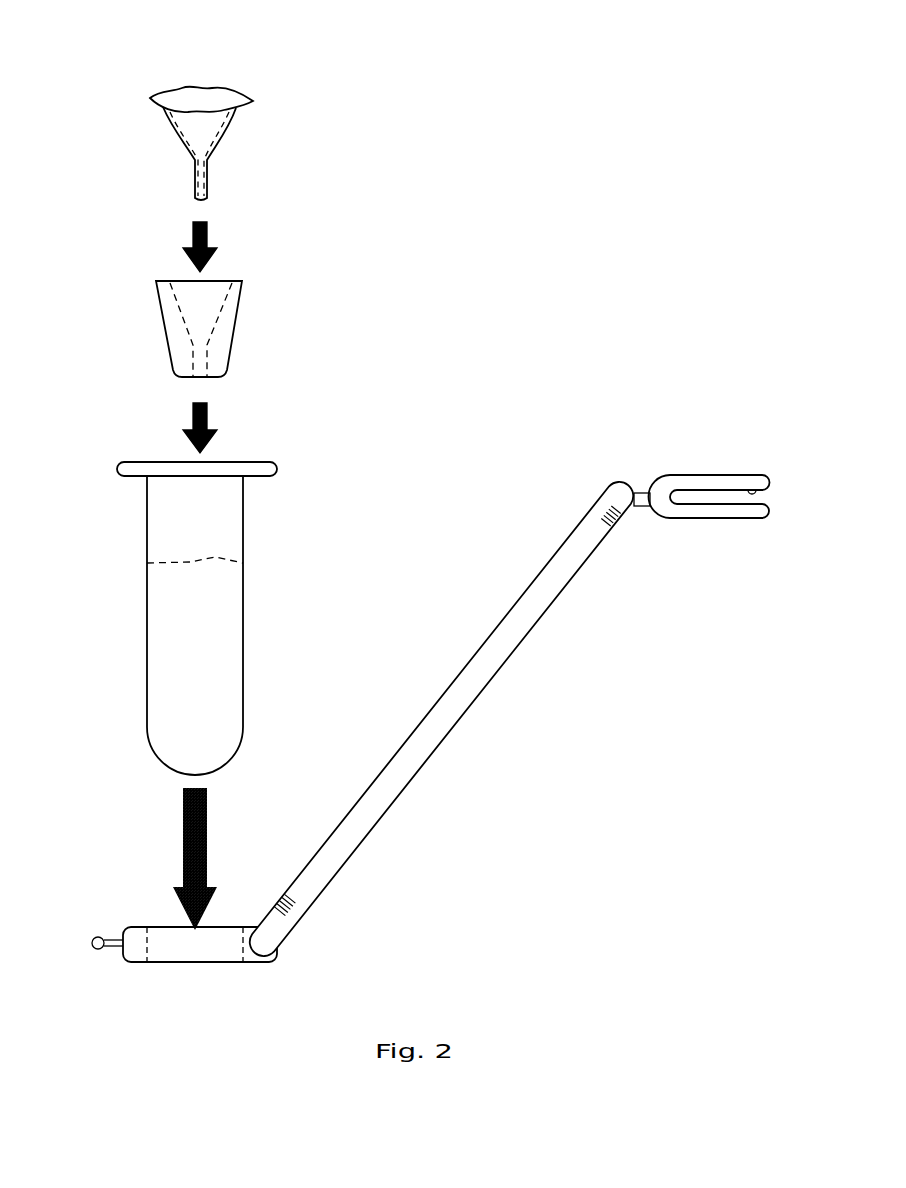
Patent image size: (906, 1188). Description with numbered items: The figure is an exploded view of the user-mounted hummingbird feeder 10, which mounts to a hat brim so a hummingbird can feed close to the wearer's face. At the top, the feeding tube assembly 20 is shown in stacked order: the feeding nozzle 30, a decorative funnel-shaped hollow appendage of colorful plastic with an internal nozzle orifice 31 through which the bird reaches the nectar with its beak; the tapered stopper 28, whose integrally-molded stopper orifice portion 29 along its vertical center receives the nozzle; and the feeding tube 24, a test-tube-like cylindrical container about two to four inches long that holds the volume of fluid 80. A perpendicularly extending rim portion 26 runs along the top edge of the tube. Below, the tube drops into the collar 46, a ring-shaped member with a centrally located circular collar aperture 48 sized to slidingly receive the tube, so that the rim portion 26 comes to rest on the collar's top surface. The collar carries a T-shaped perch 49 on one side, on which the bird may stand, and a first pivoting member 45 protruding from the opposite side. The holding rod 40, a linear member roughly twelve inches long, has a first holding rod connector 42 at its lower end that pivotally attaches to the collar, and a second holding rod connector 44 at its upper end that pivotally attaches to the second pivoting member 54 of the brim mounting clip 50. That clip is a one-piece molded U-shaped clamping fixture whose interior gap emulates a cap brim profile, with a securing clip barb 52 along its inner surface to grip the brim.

The user-mounted hummingbird feeder 10 is at (697, 80).
The feeding tube assembly 20 is at (319, 426).
The feeding tube 24 is at (146, 657).
The rim portion 26 is at (275, 476).
The stopper 28 is at (237, 327).
The stopper orifice portion 29 is at (192, 323).
The feeding nozzle 30 is at (240, 92).
The nozzle orifice 31 is at (222, 135).
The holding rod 40 is at (450, 692).
The first holding rod connector 42 is at (280, 932).
The second holding rod connector 44 is at (608, 495).
The first pivoting member 45 is at (267, 962).
The collar 46 is at (223, 927).
The collar aperture 48 is at (173, 947).
The perch 49 is at (92, 937).
The brim mounting clip 50 is at (697, 477).
The securing clip barb 52 is at (750, 498).
The second pivoting member 54 is at (643, 508).
The fluid 80 is at (218, 560).